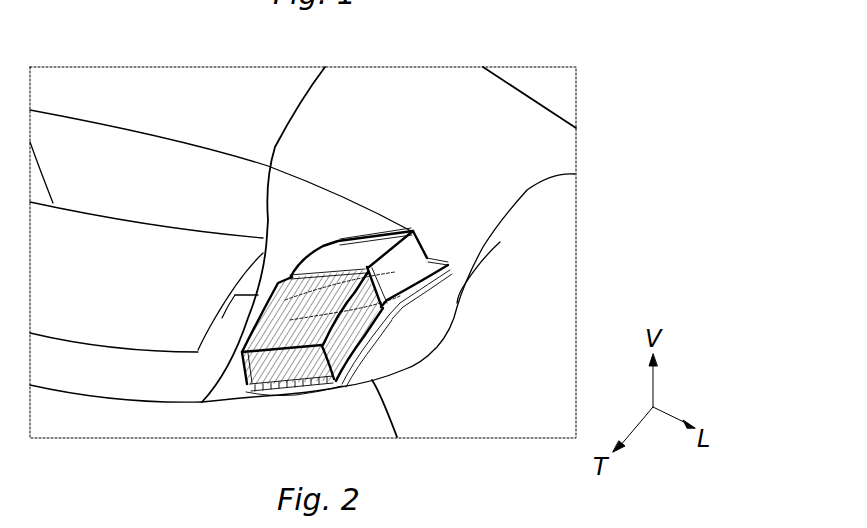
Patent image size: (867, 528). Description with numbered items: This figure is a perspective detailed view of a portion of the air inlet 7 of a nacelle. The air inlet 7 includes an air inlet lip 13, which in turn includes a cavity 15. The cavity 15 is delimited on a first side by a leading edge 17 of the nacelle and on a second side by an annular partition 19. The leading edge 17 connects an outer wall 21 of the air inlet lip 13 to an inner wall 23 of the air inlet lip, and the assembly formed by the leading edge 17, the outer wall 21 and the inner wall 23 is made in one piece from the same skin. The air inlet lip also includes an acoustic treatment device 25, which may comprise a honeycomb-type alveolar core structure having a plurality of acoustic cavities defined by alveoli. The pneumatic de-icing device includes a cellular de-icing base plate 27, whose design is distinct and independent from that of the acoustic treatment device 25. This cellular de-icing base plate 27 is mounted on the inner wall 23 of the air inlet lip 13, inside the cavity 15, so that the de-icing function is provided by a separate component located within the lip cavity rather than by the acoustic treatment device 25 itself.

The air inlet 7 is at (485, 51).
The air inlet lip 13 is at (525, 140).
The cavity 15 is at (348, 220).
The leading edge 17 is at (520, 218).
The annular partition 19 is at (283, 197).
The outer wall 21 is at (427, 98).
The inner wall 23 is at (397, 404).
The acoustic treatment device 25 is at (243, 365).
The cellular de-icing base plate 27 is at (388, 318).